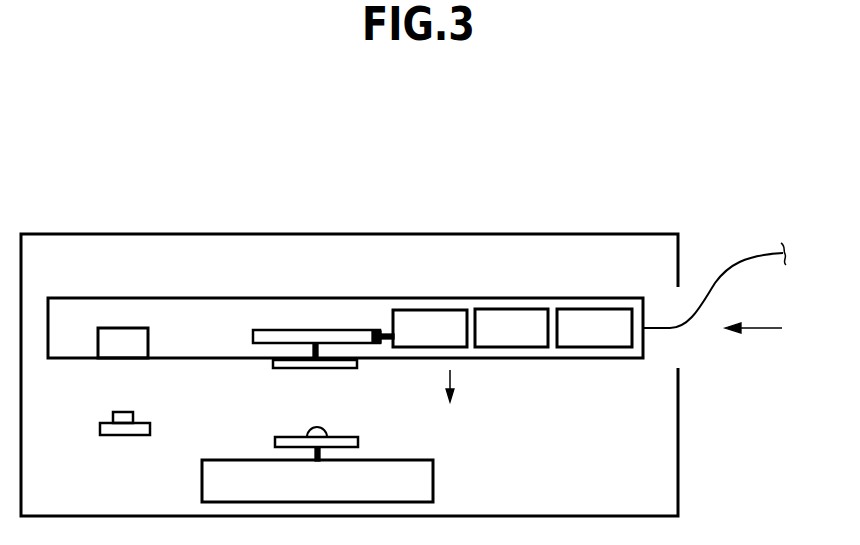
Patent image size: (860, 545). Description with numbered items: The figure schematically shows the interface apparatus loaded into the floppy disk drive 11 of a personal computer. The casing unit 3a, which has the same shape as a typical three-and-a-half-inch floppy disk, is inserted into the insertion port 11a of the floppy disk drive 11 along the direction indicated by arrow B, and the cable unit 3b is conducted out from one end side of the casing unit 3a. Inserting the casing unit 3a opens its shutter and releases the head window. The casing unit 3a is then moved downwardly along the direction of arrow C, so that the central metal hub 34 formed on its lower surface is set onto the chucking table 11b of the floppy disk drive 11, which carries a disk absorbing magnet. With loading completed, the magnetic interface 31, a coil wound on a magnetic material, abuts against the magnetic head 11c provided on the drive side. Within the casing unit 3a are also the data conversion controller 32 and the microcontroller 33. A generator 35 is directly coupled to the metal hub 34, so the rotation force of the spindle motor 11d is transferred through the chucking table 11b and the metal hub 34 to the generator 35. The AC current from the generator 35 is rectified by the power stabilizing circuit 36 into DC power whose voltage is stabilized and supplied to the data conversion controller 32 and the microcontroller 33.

The floppy disk drive 11 is at (95, 234).
The insertion port 11a is at (663, 307).
The chucking table 11b is at (347, 437).
The magnetic head 11c is at (135, 417).
The spindle motor 11d is at (433, 480).
The casing unit 3a is at (322, 298).
The cable unit 3b is at (767, 257).
The magnetic interface 31 is at (122, 328).
The data conversion controller 32 is at (510, 309).
The microcontroller 33 is at (590, 309).
The central metal hub 34 is at (355, 369).
The generator 35 is at (365, 330).
The power stabilizing circuit 36 is at (428, 310).
The arrow B is at (758, 332).
The arrow C is at (453, 377).